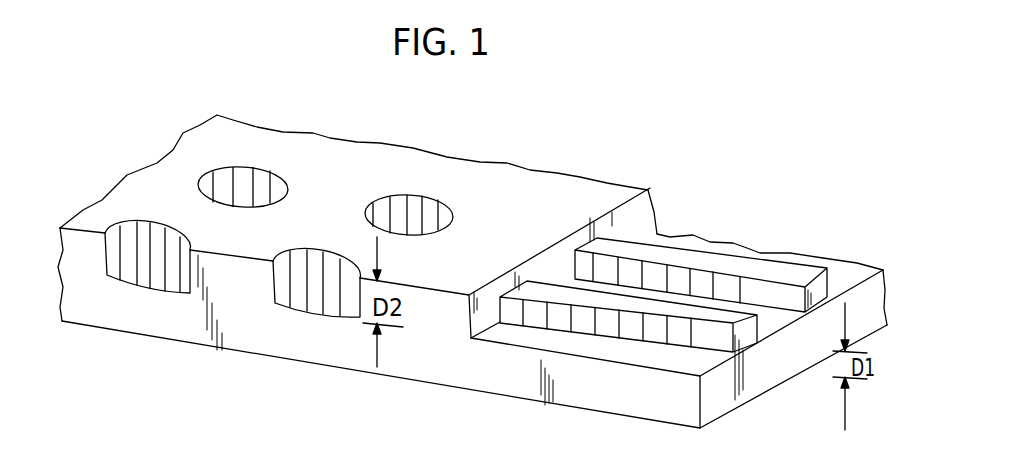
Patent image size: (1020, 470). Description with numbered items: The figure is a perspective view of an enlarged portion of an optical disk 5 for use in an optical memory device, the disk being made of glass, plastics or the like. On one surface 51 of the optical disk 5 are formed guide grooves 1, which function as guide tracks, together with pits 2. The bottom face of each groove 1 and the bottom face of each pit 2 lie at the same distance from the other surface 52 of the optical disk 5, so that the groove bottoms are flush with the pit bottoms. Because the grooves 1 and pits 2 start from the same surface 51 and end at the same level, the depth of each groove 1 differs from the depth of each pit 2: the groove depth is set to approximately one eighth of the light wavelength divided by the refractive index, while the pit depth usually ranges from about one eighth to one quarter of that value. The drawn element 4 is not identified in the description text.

The guide groove 1 is at (840, 272).
The pit 2 is at (273, 192).
The projecting rib 4 is at (692, 262).
The optical disk 5 is at (590, 388).
The one surface 51 is at (553, 183).
The other surface 52 is at (500, 398).